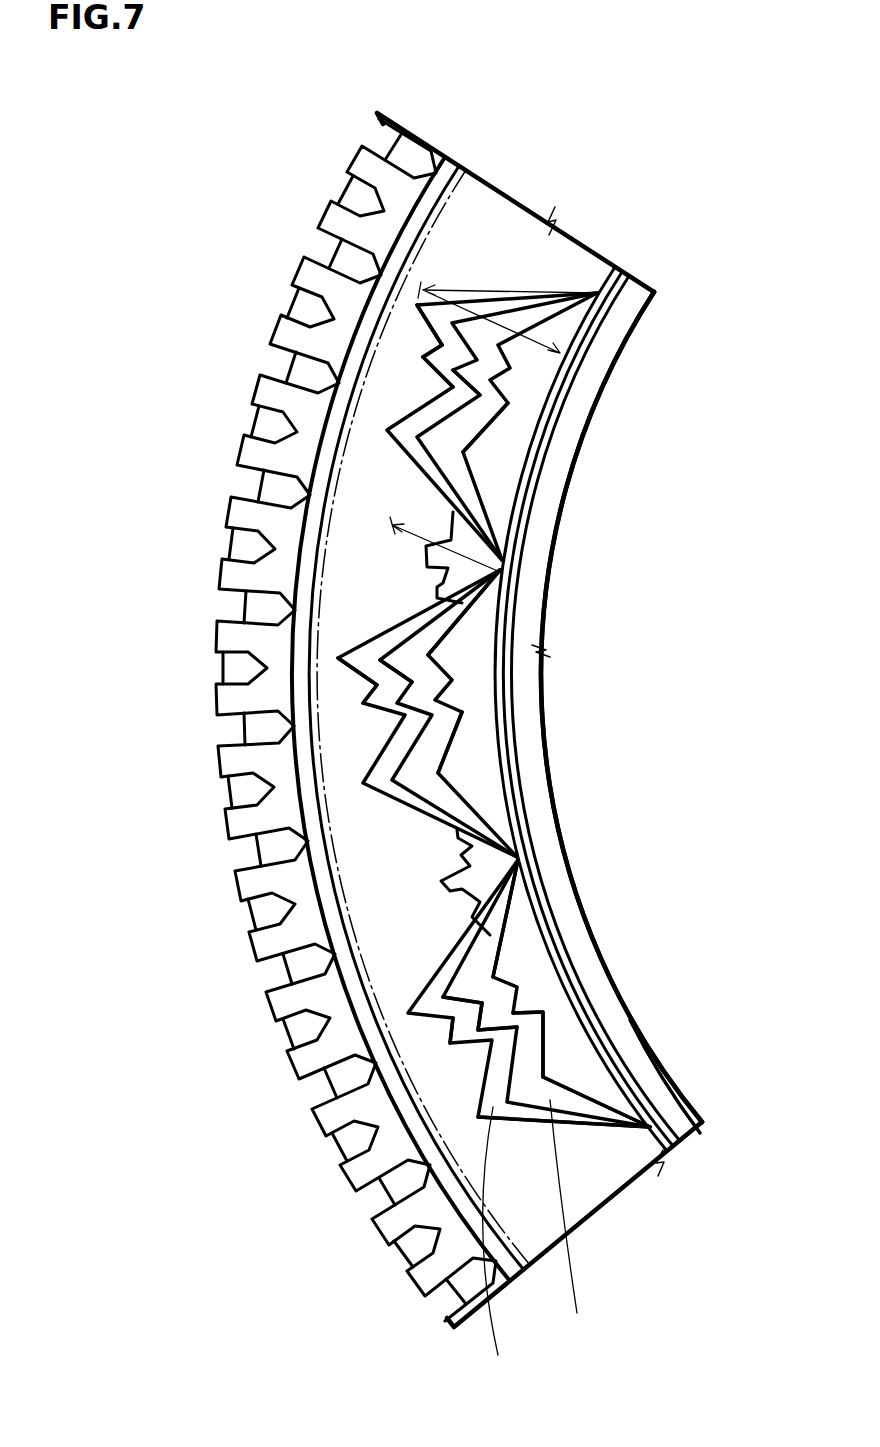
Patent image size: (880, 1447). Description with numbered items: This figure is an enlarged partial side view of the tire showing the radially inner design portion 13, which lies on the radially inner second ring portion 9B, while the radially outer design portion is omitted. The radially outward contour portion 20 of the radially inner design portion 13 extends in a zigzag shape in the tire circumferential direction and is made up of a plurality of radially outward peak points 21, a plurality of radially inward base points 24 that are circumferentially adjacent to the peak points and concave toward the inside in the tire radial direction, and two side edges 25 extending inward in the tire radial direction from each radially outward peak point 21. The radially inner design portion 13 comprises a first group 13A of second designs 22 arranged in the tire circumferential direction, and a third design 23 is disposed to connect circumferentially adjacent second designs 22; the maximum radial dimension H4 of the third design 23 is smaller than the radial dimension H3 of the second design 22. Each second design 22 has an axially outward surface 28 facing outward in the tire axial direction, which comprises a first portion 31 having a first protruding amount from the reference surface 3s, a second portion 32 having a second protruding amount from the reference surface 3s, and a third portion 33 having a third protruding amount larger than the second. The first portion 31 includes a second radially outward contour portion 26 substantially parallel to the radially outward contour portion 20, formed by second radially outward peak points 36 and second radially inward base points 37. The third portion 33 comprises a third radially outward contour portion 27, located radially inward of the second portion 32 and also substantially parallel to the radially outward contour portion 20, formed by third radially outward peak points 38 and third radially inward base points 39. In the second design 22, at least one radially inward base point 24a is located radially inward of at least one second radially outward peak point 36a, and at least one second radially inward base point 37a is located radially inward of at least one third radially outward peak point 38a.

The radially inner design portion 13 is at (568, 426).
The first group 13A is at (572, 800).
The radially inner second ring portion 9B is at (618, 302).
The second design 22 is at (580, 392).
The third design 23 is at (497, 625).
The second radially outward contour portion 26 is at (460, 1092).
The reference surface 3s is at (372, 596).
The radially outward contour portion 20 is at (400, 461).
The radially outward peak points 21 is at (455, 320).
The radially inward base points 24 is at (441, 345).
The side edges 25 is at (478, 396).
The radially inward base point 24a is at (376, 686).
The second radially outward peak point 36a is at (430, 575).
The second radially outward peak points 36 is at (455, 880).
The second radially inward base point 37a is at (413, 733).
The third radially outward peak point 38a is at (425, 640).
The second radially inward base points 37 is at (492, 1040).
The third radially outward peak points 38 is at (507, 925).
The third radially inward base points 39 is at (545, 1011).
The third radially outward contour portion 27 is at (620, 1118).
The axially outward surface 28 is at (583, 1067).
The third portion 33 is at (583, 1067).
The first portion 31 is at (498, 1242).
The second portion 32 is at (572, 1216).
The dimension in the tire radial direction of the second design H3 is at (560, 353).
The maximum dimension in the tire radial direction of the third design H4 is at (395, 527).